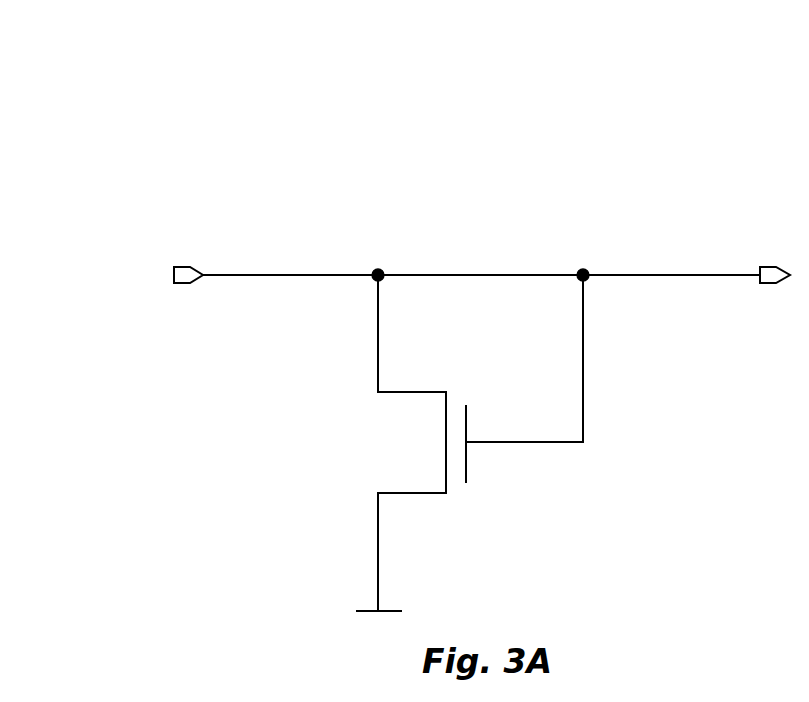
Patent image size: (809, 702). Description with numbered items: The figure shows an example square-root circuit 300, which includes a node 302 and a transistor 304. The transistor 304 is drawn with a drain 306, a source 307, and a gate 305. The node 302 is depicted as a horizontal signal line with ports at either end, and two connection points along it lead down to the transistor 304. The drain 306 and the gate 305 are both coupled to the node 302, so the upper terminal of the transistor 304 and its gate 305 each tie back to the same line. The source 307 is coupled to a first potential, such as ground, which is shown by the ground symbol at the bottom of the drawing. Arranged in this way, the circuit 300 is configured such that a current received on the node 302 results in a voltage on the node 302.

The square-root circuit 300 is at (158, 112).
The node 302 is at (257, 275).
The transistor 304 is at (480, 463).
The gate 305 is at (468, 418).
The drain 306 is at (412, 392).
The source 307 is at (412, 493).